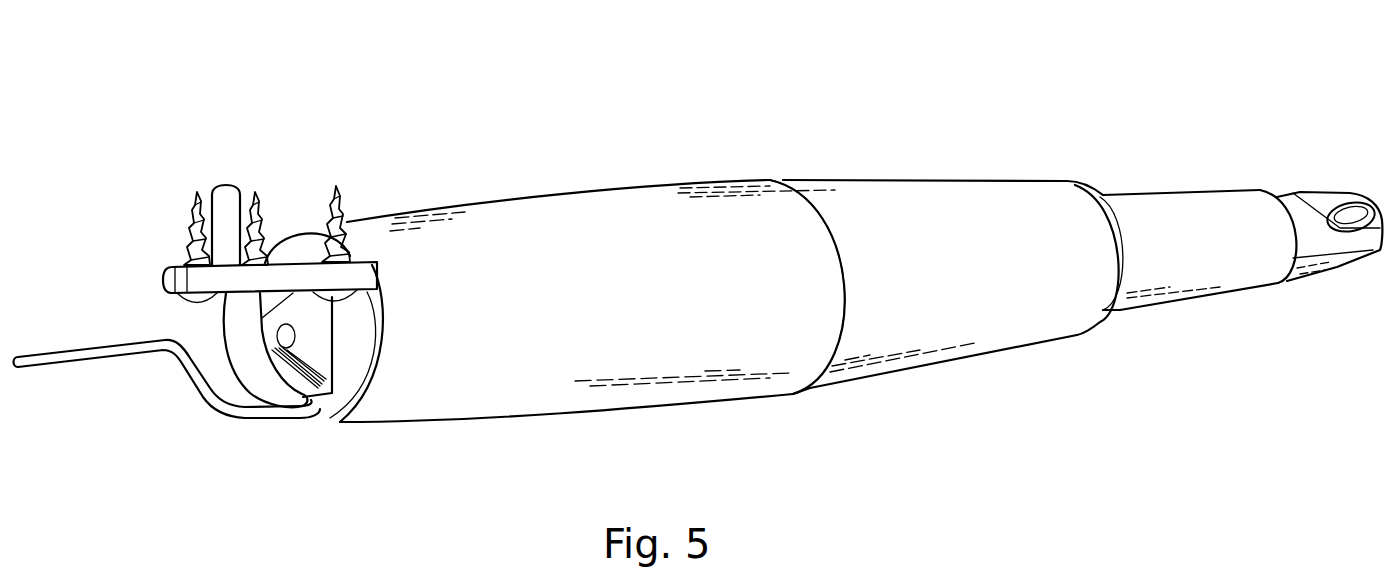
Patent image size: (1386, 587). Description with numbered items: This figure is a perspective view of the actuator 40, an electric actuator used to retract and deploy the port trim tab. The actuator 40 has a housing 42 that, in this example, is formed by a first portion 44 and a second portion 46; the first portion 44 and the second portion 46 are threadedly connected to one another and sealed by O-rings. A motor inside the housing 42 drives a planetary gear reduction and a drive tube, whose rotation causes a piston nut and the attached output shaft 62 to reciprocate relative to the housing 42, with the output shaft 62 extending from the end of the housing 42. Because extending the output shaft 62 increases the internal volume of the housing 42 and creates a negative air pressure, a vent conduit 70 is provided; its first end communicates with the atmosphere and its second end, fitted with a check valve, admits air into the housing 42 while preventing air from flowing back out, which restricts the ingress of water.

The actuator 40 is at (329, 166).
The housing 42 is at (773, 181).
The first portion 44 is at (572, 218).
The second portion 46 is at (1007, 218).
The output shaft 62 is at (1310, 195).
The vent conduit 70 is at (147, 337).